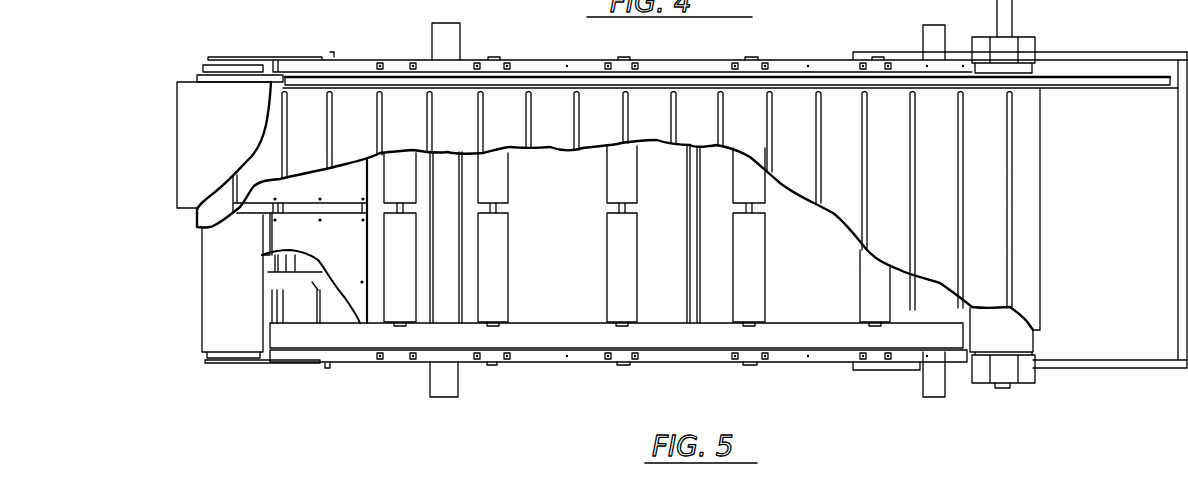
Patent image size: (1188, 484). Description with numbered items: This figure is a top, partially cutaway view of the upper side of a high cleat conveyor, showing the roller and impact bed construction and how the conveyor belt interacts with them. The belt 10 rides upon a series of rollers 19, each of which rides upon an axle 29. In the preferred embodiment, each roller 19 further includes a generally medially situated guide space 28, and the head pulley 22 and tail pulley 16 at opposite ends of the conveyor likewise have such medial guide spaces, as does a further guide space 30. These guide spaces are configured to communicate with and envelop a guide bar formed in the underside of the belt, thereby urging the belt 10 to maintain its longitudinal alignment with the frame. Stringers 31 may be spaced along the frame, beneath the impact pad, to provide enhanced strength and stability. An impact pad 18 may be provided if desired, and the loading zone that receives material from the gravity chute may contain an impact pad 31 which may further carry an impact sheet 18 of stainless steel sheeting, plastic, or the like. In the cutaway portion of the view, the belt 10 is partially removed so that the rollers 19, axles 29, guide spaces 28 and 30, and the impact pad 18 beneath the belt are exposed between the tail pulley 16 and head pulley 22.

The belt 10 is at (835, 107).
The tail pulley 16 is at (217, 300).
The impact pad 18 is at (567, 261).
The roller 19 is at (637, 288).
The head pulley 22 is at (1020, 338).
The guide space 28 is at (758, 208).
The axle 29 is at (605, 325).
The guide space 30 is at (247, 215).
The stringer 31 is at (320, 290).